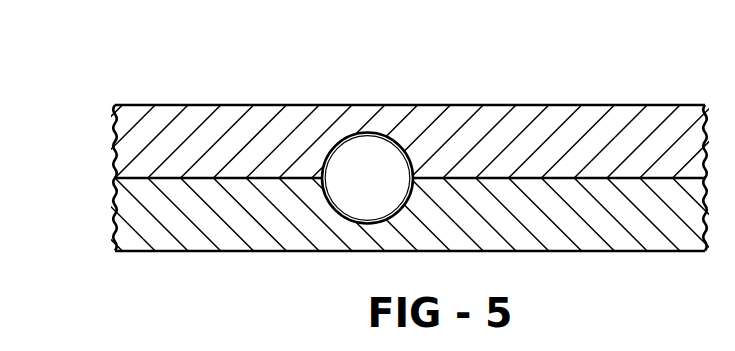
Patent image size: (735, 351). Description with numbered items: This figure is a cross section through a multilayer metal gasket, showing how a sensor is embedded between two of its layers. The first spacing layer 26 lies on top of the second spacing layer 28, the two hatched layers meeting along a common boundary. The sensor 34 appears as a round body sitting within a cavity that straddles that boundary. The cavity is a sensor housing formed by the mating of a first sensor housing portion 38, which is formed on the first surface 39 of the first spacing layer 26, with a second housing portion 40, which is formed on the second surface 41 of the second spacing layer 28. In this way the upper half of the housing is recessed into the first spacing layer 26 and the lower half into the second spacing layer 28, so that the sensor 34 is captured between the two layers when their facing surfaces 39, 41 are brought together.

The first spacing layer 26 is at (236, 117).
The second spacing layer 28 is at (250, 237).
The sensor 34 is at (383, 153).
The first sensor housing portion 38 is at (410, 156).
The first surface 39 is at (582, 178).
The second housing portion 40 is at (335, 212).
The second surface 41 is at (602, 180).